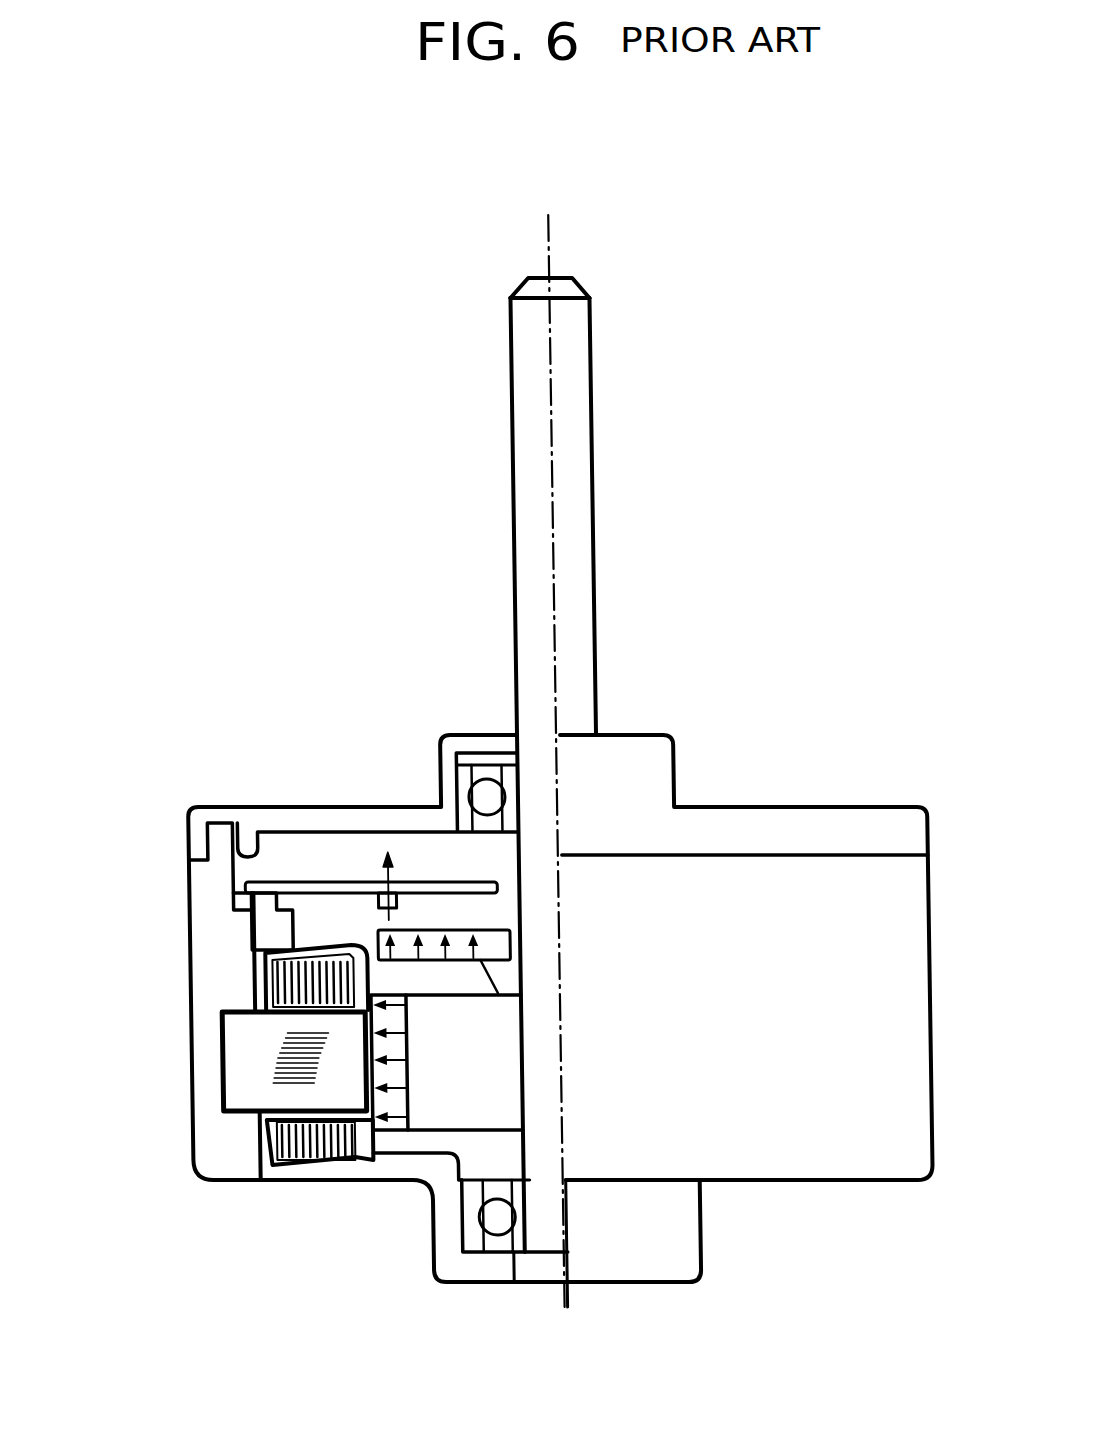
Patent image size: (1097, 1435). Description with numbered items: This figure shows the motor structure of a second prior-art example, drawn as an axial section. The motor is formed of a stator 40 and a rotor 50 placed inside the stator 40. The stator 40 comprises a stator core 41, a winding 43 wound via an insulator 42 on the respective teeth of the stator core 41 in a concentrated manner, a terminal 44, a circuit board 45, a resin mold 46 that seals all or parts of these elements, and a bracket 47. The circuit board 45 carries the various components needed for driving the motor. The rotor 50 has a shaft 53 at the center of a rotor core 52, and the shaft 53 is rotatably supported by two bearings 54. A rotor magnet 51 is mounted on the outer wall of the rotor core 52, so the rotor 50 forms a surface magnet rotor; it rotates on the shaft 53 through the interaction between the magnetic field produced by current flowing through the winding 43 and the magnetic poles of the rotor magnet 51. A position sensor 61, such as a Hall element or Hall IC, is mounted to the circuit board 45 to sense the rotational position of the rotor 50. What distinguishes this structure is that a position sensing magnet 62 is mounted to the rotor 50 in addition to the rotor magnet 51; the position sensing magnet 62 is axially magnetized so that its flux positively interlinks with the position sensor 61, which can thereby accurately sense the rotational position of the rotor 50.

The stator 40 is at (187, 782).
The stator core 41 is at (248, 1074).
The insulator 42 is at (252, 1182).
The winding 43 is at (323, 1163).
The terminal 44 is at (280, 933).
The circuit board 45 is at (312, 880).
The resin mold 46 is at (215, 968).
The bracket 47 is at (247, 812).
The rotor 50 is at (520, 1140).
The rotor magnet 51 is at (398, 1025).
The rotor core 52 is at (500, 1073).
The shaft 53 is at (596, 604).
The bearings 54 is at (510, 777).
The position sensor 61 is at (398, 891).
The position sensing magnet 62 is at (474, 928).